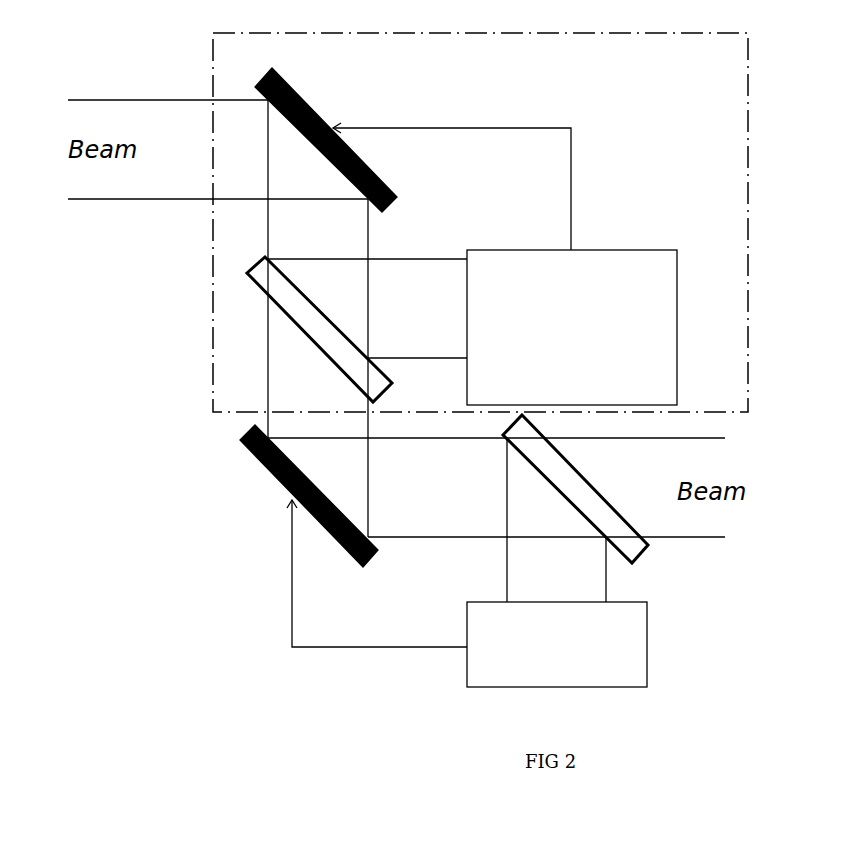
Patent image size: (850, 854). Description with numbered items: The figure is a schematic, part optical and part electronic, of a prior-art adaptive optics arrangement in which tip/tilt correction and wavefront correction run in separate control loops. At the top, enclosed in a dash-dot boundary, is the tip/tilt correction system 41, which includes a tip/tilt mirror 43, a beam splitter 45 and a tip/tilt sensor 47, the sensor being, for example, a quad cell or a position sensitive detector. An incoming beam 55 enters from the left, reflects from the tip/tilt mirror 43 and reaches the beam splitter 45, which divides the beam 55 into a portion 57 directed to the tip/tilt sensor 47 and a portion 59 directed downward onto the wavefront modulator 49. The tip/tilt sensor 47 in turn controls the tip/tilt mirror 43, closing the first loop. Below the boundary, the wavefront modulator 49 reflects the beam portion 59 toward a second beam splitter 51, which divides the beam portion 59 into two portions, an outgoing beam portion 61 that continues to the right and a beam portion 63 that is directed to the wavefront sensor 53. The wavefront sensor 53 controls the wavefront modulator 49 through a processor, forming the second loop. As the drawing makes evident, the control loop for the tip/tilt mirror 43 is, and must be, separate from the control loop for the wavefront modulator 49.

The tip/tilt correction system 41 is at (750, 163).
The tip/tilt mirror 43 is at (305, 100).
The beam splitter 45 is at (333, 358).
The tip/tilt sensor 47 is at (655, 322).
The wavefront modulator 49 is at (280, 480).
The beam splitter 51 is at (650, 556).
The wavefront sensor 53 is at (650, 649).
The beam 55 is at (105, 200).
The beam portion 57 is at (412, 259).
The beam portion 59 is at (267, 393).
The beam portion 61 is at (715, 543).
The beam portion 63 is at (505, 568).